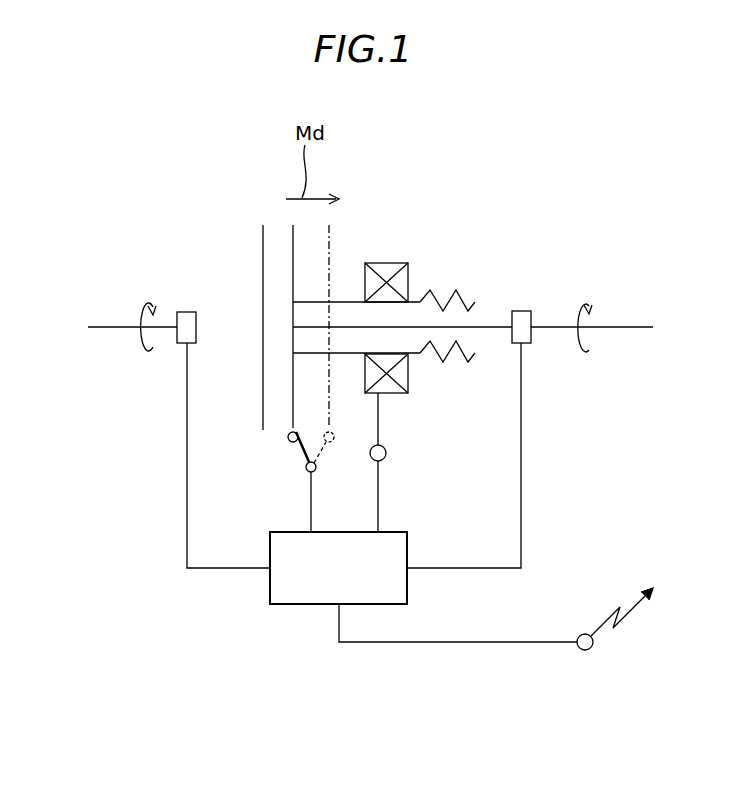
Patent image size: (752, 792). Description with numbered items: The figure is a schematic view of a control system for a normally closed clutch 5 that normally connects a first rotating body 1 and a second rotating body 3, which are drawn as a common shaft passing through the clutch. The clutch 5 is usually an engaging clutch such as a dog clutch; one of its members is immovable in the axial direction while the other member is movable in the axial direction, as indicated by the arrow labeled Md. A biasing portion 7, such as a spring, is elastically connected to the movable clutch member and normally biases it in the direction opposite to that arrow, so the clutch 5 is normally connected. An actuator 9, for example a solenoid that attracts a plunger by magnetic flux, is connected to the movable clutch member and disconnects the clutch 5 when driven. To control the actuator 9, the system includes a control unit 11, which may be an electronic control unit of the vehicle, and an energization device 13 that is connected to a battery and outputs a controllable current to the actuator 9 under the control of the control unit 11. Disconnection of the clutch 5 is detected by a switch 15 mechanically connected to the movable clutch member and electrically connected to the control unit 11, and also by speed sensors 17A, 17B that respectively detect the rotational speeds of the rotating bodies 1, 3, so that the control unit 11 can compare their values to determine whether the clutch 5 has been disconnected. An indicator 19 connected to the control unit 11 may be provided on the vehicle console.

The first rotating body 1 is at (636, 325).
The second rotating body 3 is at (108, 325).
The clutch 5 is at (257, 206).
The biasing portion 7 is at (444, 281).
The actuator 9 is at (390, 262).
The control unit 11 is at (395, 531).
The energization device 13 is at (386, 451).
The switch 15 is at (296, 452).
The speed sensor 17A is at (527, 310).
The speed sensor 17B is at (191, 311).
The indicator 19 is at (591, 648).